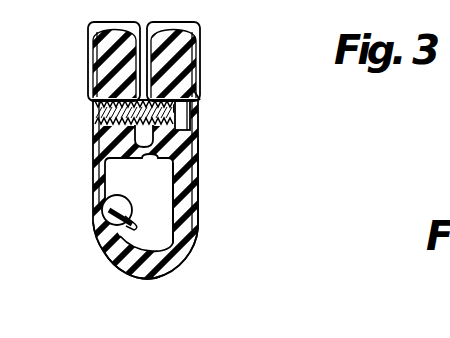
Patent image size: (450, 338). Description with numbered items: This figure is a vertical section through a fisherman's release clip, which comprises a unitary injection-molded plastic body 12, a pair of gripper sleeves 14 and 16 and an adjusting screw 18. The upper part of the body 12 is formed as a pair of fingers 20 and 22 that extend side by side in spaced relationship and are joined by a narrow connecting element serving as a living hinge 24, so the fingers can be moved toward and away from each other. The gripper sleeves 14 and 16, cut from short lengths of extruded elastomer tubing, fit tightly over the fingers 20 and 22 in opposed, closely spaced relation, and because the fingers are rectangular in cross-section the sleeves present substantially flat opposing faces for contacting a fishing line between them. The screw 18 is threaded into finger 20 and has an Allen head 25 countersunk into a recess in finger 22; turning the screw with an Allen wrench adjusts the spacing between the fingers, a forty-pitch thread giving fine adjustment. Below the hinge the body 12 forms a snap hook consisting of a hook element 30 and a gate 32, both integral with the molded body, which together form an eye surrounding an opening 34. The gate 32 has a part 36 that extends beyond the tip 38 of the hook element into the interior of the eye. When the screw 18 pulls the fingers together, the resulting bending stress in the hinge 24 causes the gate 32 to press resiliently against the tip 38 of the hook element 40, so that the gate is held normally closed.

The body 12 is at (198, 177).
The gripper sleeve 14 is at (200, 55).
The gripper sleeve 16 is at (88, 63).
The adjusting screw 18 is at (100, 132).
The finger 20 is at (100, 97).
The finger 22 is at (200, 92).
The living hinge 24 is at (100, 158).
The Allen head 25 is at (195, 113).
The hook element 30 is at (153, 213).
The gate 32 is at (100, 214).
The opening 34 is at (185, 265).
The part of the gate 36 is at (103, 199).
The tip of the hook element 38 is at (100, 233).
The hook element 40 is at (157, 278).